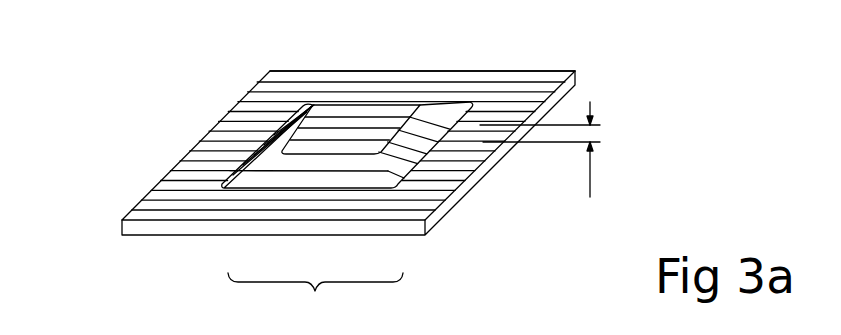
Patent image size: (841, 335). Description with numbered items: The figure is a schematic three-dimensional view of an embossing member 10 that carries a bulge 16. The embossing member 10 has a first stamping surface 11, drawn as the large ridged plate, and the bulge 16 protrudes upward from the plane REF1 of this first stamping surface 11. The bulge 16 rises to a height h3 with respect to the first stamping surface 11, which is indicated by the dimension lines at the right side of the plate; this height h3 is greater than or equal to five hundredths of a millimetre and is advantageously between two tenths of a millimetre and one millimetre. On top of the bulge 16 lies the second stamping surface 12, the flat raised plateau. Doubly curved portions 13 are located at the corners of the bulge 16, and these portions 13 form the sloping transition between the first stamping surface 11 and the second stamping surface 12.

The embossing member 10 is at (326, 174).
The first stamping surface 11 is at (276, 82).
The second stamping surface 12 is at (348, 120).
The doubly curved portions 13 is at (421, 105).
The bulge 16 is at (315, 299).
The plane of the first stamping surface REF1 is at (532, 82).
The height of the bulge h3 is at (540, 149).